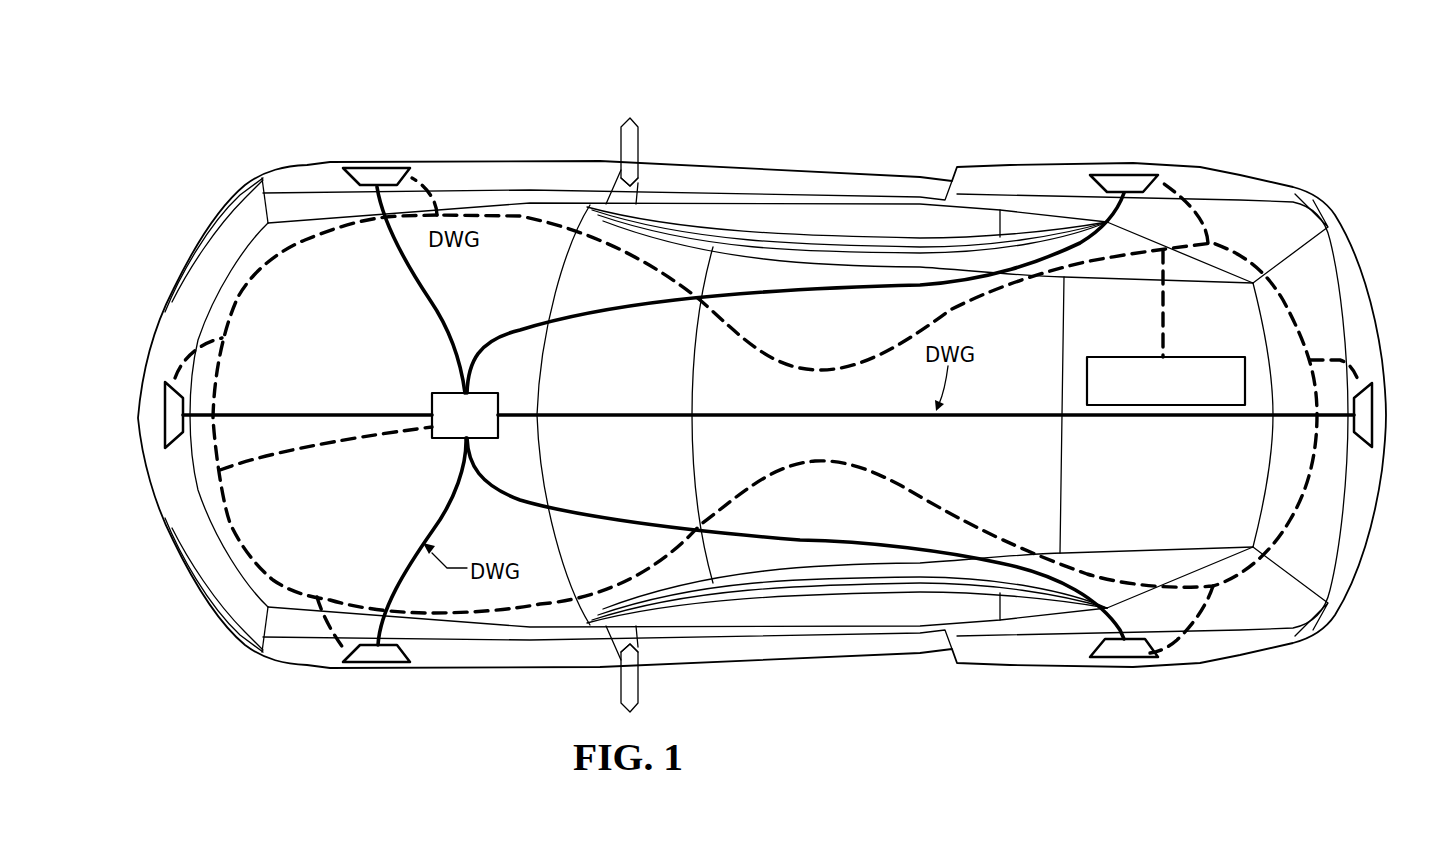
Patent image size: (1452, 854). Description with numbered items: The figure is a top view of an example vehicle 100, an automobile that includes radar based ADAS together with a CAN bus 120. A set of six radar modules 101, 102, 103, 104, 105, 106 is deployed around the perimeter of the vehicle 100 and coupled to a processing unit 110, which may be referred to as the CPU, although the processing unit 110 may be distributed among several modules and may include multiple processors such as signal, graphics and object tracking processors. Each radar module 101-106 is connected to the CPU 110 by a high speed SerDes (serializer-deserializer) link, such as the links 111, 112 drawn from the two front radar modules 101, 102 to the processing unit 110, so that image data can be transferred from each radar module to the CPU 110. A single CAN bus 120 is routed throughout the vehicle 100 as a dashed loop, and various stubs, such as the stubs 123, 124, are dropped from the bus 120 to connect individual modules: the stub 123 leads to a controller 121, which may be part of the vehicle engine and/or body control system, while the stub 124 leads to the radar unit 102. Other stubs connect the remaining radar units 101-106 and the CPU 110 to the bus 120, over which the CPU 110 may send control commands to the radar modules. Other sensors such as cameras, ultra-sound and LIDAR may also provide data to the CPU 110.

The vehicle 100 is at (174, 128).
The radar module 101 is at (343, 177).
The radar module 102 is at (1087, 177).
The radar module 103 is at (176, 450).
The radar module 104 is at (412, 652).
The radar module 105 is at (1090, 642).
The radar module 106 is at (1372, 452).
The processing unit 110 is at (430, 400).
The SerDes link 111 is at (450, 275).
The SerDes link 112 is at (797, 297).
The CAN bus 120 is at (1000, 290).
The controller 121 is at (1200, 357).
The stub 123 is at (1160, 327).
The stub 124 is at (1215, 240).